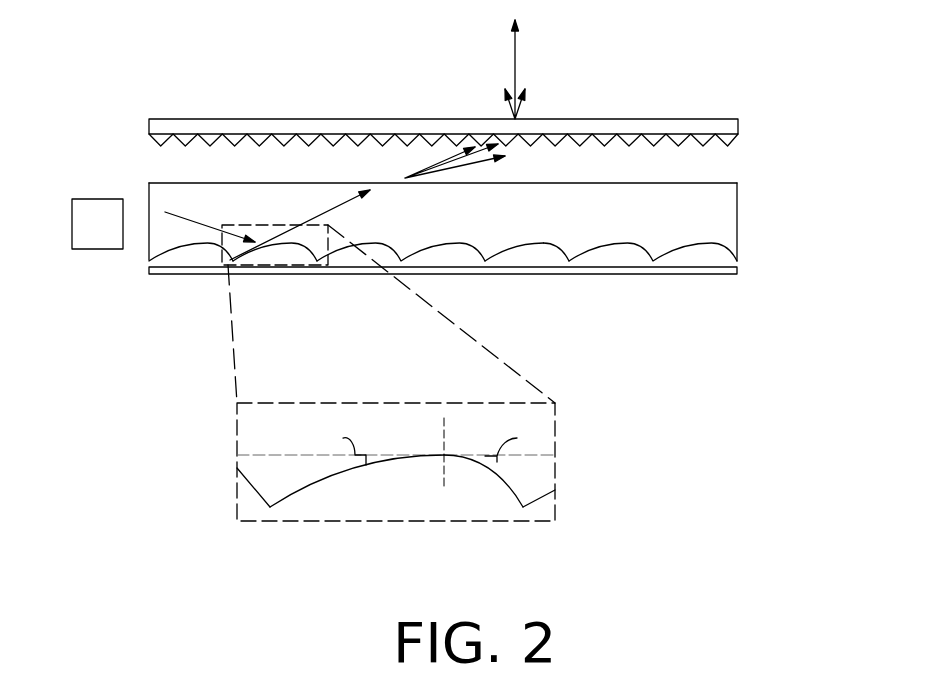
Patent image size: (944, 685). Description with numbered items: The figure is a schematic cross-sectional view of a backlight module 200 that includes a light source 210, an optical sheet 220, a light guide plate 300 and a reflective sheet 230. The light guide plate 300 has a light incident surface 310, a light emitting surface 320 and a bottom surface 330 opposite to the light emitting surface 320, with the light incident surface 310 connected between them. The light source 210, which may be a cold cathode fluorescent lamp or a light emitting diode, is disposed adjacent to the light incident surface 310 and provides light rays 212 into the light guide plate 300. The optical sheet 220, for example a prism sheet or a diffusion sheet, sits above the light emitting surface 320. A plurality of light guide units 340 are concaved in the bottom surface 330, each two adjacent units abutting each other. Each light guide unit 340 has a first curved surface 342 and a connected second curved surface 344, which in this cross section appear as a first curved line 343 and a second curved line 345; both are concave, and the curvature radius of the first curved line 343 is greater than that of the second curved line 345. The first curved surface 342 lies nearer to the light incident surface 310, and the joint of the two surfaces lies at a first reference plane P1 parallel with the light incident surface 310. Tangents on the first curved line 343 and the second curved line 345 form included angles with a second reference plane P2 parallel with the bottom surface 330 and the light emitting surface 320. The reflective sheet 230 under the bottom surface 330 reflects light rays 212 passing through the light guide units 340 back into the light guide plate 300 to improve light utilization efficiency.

The backlight module 200 is at (435, 295).
The light source 210 is at (85, 206).
The light rays 212 is at (188, 226).
The optical sheet 220 is at (738, 125).
The reflective sheet 230 is at (716, 278).
The light guide plate 300 is at (459, 246).
The light incident surface 310 is at (149, 192).
The light emitting surface 320 is at (727, 182).
The bottom surface 330 is at (485, 289).
The light guide units 340 is at (328, 244).
The first curved surface 342 is at (503, 253).
The first curved line 343 is at (352, 472).
The second curved surface 344 is at (560, 253).
The second curved line 345 is at (503, 480).
The first reference plane P1 is at (447, 432).
The second reference plane P2 is at (400, 453).